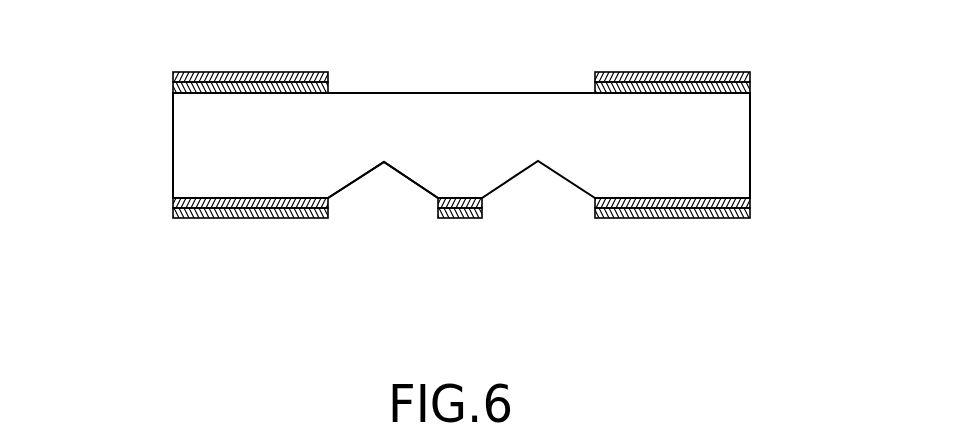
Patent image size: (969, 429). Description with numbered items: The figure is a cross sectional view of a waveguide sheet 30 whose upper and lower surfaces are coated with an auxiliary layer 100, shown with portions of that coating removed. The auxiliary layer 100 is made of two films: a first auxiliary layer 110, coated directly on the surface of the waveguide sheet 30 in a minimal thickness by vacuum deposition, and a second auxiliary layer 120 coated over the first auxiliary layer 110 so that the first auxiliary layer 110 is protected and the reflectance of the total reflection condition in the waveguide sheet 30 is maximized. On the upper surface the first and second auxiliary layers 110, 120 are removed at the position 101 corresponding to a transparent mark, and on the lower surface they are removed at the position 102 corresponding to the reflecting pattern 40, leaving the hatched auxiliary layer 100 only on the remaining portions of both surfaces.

The waveguide sheet 30 is at (733, 153).
The reflecting pattern 40 is at (507, 183).
The auxiliary layer 100 is at (390, 135).
The position corresponding to transparent mark 101 is at (541, 92).
The position corresponding to reflecting pattern 102 is at (348, 185).
The first auxiliary layer 110 is at (330, 91).
The second auxiliary layer 120 is at (330, 81).